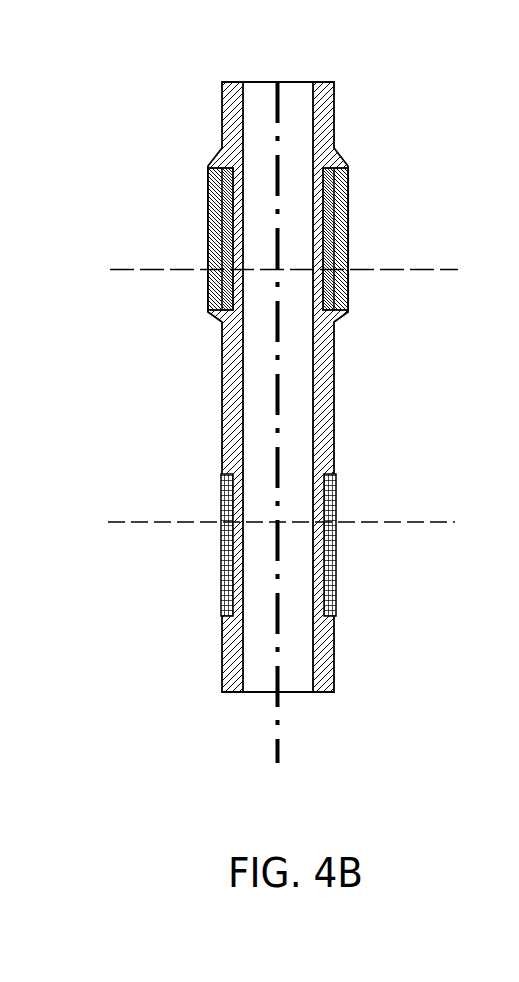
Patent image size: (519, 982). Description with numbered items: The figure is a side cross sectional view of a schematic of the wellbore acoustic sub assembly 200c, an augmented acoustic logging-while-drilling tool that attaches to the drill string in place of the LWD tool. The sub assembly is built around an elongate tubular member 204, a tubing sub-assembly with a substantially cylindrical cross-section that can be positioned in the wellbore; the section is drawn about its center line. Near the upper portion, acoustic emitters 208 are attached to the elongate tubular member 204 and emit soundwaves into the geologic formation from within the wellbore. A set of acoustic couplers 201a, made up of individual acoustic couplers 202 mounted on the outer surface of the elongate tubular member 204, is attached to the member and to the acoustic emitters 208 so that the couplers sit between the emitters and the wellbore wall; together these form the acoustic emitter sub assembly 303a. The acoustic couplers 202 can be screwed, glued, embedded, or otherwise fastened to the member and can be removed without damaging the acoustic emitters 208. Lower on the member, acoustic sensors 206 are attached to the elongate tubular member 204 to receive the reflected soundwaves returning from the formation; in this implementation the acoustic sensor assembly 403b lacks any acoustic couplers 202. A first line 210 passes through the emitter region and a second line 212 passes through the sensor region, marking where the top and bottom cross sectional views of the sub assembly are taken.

The wellbore acoustic sub assembly 200c is at (126, 156).
The set of acoustic couplers 201a is at (364, 221).
The acoustic coupler 202 is at (211, 254).
The acoustic emitter 208 is at (337, 233).
The elongate tubular member 204 is at (224, 403).
The acoustic sensor 206 is at (224, 543).
The first line 210 is at (397, 273).
The second line 212 is at (455, 522).
The acoustic emitter sub assembly 303a is at (159, 257).
The acoustic sensor assembly 403b is at (191, 502).